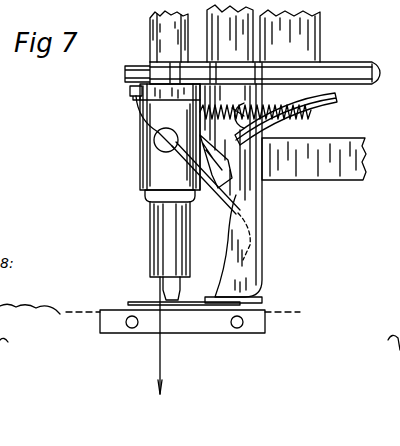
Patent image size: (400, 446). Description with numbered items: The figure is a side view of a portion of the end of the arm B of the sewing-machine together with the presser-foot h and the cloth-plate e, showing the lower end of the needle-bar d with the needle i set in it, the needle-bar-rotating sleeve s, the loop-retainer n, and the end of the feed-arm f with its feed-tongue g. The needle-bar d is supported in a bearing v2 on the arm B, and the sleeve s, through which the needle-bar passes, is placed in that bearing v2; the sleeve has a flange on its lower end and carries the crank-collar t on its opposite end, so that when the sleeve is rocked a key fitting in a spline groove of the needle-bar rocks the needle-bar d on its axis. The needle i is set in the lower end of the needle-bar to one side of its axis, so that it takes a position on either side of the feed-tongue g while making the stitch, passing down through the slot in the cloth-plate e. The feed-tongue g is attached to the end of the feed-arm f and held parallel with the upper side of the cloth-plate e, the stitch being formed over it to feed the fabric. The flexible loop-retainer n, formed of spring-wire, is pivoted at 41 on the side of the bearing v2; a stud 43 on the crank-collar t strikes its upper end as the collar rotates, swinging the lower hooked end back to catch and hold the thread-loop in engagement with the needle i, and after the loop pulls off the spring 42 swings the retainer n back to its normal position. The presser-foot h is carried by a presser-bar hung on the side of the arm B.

The needle-bar d is at (150, 40).
The arm B is at (314, 28).
The crank-collar t is at (125, 67).
The stud 43 is at (130, 91).
The needle-bar bearing v2 is at (140, 143).
The pivot of the loop-retainer 41 is at (157, 136).
The loop-retainer n is at (211, 201).
The sleeve s is at (145, 194).
The feed-tongue g is at (176, 292).
The needle i is at (169, 335).
The cloth-plate e is at (263, 321).
The presser-foot h is at (255, 268).
The spring 42 is at (268, 119).
The feed-arm f is at (366, 153).